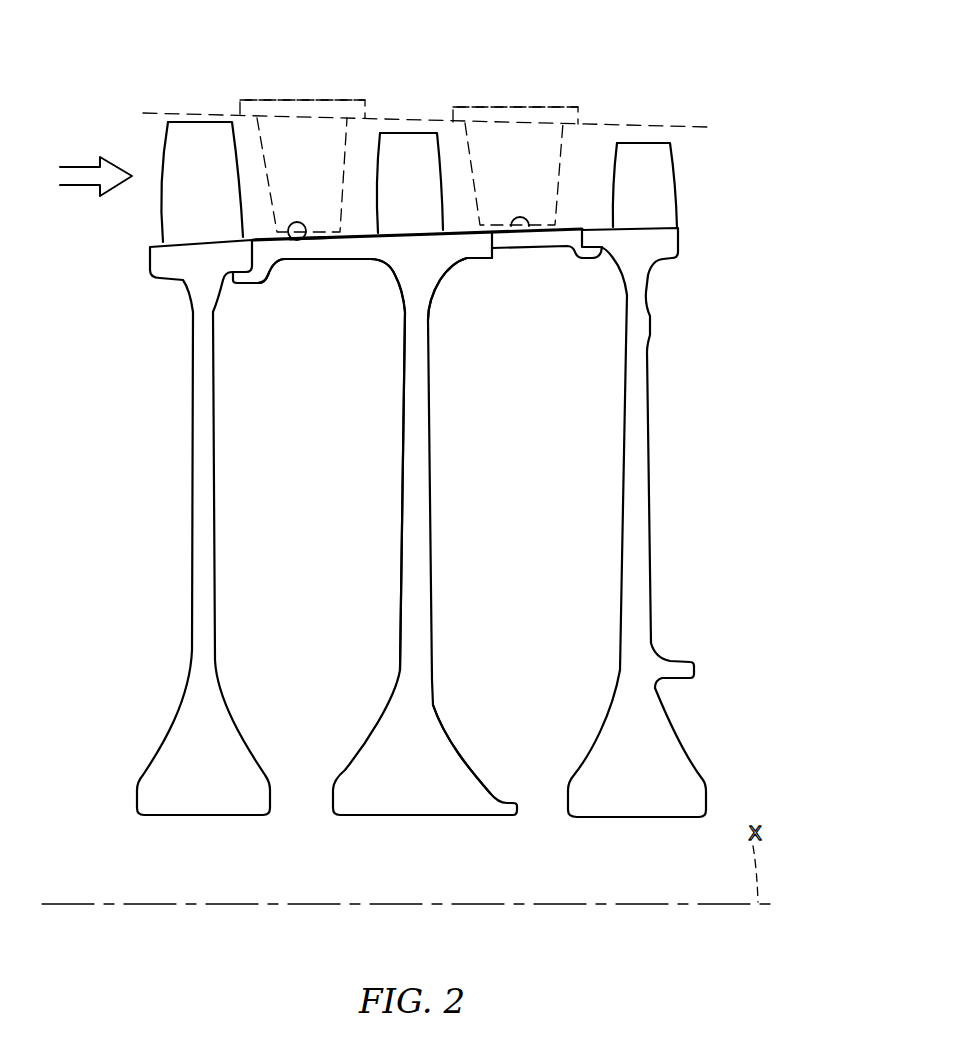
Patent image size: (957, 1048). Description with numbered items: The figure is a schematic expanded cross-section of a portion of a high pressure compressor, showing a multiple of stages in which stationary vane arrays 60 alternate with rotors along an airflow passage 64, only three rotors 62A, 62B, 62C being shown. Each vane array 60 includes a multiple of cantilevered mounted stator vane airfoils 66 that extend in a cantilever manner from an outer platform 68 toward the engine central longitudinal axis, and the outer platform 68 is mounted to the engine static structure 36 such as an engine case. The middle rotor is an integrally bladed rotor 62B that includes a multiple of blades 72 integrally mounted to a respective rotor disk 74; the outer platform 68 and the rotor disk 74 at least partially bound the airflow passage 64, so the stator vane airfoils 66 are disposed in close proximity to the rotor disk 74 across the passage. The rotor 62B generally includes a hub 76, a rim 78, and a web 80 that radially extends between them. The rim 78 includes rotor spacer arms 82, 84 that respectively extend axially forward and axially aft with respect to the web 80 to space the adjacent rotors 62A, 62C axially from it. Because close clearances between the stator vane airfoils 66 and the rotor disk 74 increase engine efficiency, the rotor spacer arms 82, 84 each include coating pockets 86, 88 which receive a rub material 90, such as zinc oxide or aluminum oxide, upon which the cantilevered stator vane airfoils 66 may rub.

The engine static structure 36 is at (690, 127).
The stationary vane array 60 is at (290, 95).
The adjacent rotor 62A is at (227, 545).
The integrally bladed rotor 62B is at (458, 558).
The adjacent rotor 62C is at (663, 518).
The airflow passage 64 is at (82, 165).
The cantilevered mounted stator vane airfoil 66 is at (284, 170).
The outer platform 68 is at (328, 105).
The blade 72 is at (182, 198).
The rotor disk 74 is at (378, 296).
The hub 76 is at (437, 763).
The rim 78 is at (444, 250).
The web 80 is at (418, 494).
The rotor spacer arm 82 is at (323, 216).
The rotor spacer arm 84 is at (565, 214).
The coating pocket 86 is at (310, 242).
The coating pocket 88 is at (490, 236).
The rub material 90 is at (297, 242).